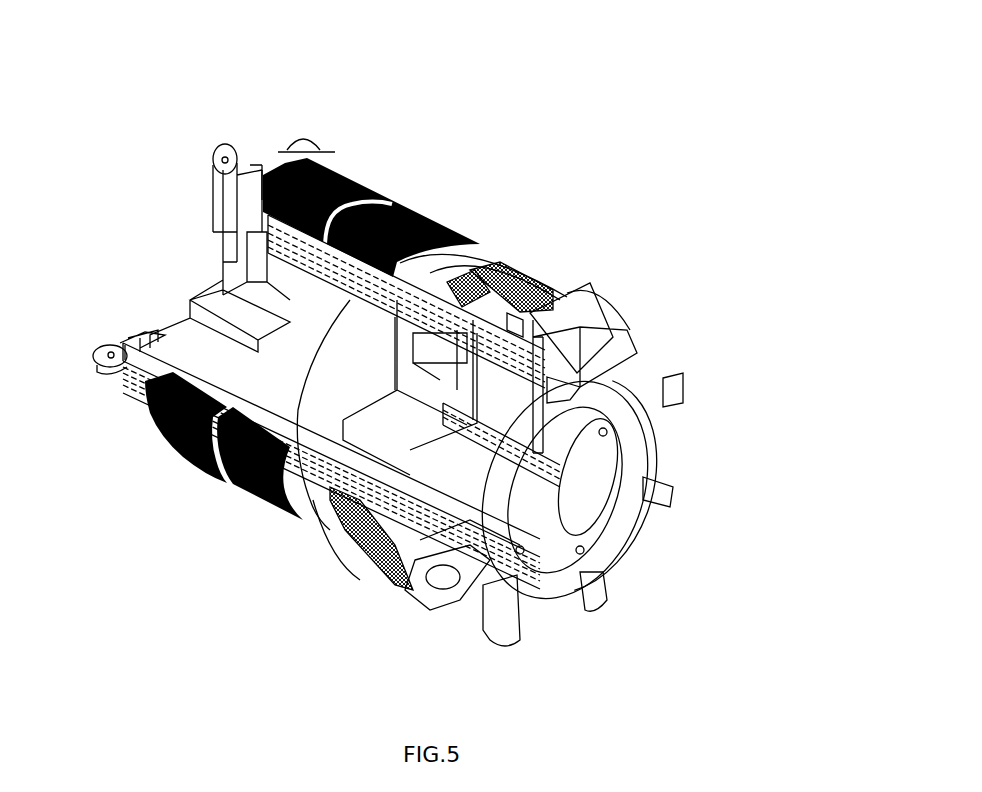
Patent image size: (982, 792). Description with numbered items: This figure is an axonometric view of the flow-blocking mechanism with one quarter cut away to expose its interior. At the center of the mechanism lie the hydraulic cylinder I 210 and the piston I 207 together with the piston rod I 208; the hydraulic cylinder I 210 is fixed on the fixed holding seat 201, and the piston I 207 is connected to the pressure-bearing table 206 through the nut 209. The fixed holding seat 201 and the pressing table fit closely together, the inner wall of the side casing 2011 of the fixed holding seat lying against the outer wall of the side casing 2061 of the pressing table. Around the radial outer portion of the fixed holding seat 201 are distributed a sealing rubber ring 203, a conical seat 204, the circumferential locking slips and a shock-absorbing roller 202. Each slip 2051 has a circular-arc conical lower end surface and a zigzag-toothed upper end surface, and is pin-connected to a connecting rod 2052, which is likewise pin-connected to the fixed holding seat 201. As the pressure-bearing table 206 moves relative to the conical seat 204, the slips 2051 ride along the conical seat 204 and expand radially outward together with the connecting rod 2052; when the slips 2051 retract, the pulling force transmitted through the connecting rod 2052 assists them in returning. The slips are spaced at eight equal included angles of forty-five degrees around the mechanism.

The fixed holding seat 201 is at (258, 215).
The side casing of the pressing table 2061 is at (295, 232).
The side casing of the fixed holding seat 2011 is at (140, 333).
The sealing rubber ring 203 is at (352, 172).
The conical seat 204 is at (443, 255).
The slip 2051 is at (553, 297).
The pressure-bearing table 206 is at (575, 318).
The nut 209 is at (575, 430).
The shock-absorbing roller 202 is at (640, 480).
The hydraulic cylinder I 210 is at (178, 452).
The piston I 207 is at (290, 495).
The piston rod I 208 is at (352, 548).
The connecting rod 2052 is at (397, 585).